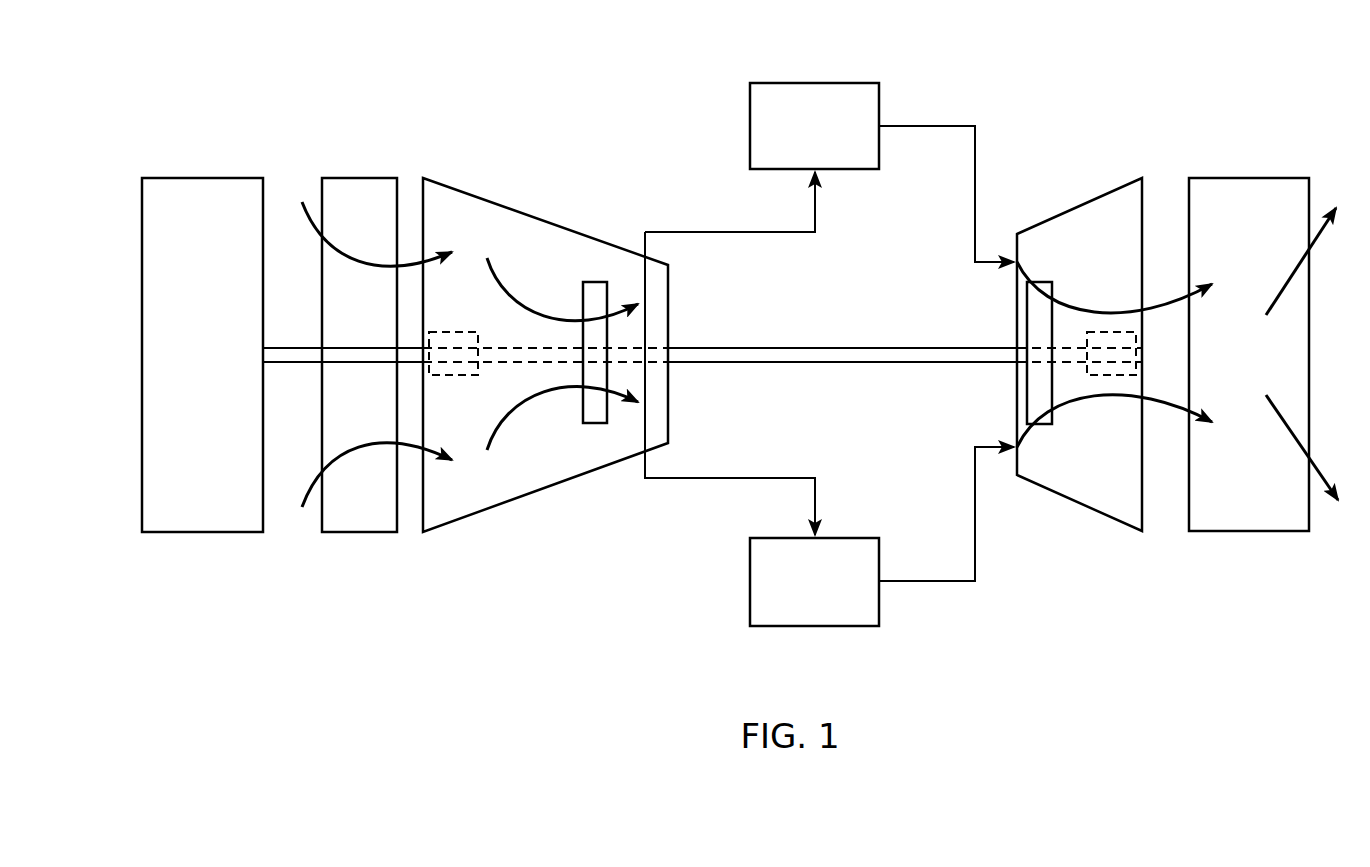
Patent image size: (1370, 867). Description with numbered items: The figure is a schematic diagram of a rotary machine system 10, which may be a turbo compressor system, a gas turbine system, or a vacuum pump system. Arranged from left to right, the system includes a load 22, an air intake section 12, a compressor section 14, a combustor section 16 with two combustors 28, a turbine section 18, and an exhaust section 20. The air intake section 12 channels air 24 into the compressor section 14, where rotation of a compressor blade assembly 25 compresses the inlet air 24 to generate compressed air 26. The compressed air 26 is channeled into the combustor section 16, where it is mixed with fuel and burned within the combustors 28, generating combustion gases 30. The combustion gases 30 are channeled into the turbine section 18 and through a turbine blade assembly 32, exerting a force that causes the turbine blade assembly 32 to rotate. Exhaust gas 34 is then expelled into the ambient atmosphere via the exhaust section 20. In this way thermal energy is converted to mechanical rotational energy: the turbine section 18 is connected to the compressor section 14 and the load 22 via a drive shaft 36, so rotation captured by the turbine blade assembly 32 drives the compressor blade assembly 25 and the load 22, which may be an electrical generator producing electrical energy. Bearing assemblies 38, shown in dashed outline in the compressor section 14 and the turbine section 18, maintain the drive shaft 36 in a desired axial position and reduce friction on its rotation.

The rotary machine system 10 is at (262, 70).
The air intake section 12 is at (358, 177).
The compressor section 14 is at (530, 215).
The combustor section 16 is at (910, 60).
The turbine section 18 is at (1082, 205).
The exhaust section 20 is at (1248, 177).
The load 22 is at (196, 177).
The air 24 is at (312, 230).
The compressor blade assembly 25 is at (602, 424).
The compressed air 26 is at (500, 273).
The combustor 28 is at (815, 82).
The combustion gases 30 is at (1168, 298).
The turbine blade assembly 32 is at (1045, 425).
The exhaust gas 34 is at (1304, 250).
The drive shaft 36 is at (832, 364).
The bearing assembly 38 is at (456, 376).